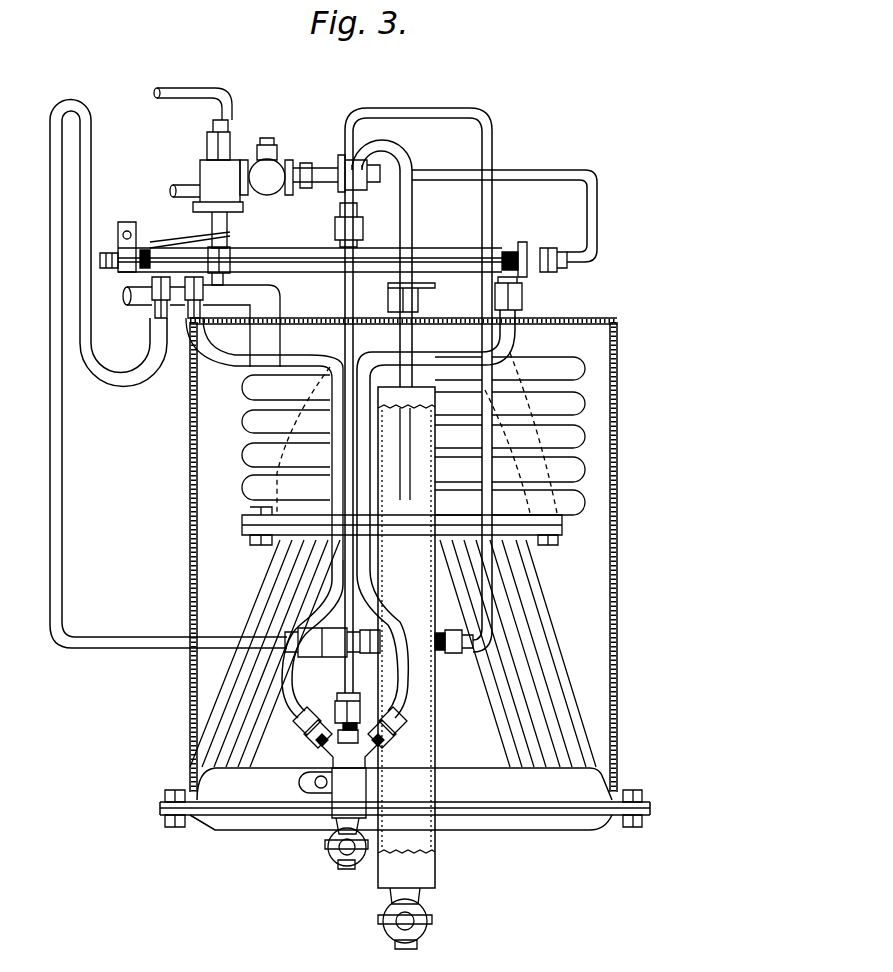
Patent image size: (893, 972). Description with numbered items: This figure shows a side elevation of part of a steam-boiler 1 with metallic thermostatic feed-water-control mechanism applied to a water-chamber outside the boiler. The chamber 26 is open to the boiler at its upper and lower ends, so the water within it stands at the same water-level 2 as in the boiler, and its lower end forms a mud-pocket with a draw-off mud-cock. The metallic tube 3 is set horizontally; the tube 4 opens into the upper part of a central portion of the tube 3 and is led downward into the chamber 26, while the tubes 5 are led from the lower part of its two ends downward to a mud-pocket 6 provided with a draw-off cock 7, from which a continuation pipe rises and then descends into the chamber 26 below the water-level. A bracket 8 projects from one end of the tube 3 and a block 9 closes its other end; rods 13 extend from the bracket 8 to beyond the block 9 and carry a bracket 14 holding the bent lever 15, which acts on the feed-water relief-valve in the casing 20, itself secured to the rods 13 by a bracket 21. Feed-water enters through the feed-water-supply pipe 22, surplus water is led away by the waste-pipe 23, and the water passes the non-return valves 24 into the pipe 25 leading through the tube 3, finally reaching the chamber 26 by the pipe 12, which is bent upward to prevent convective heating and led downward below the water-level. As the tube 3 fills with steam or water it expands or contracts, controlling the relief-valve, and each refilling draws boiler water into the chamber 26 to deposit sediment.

The steam-boiler 1 is at (517, 428).
The water-level 2 is at (425, 500).
The metallic tube 3 is at (448, 252).
The pipe 4 is at (410, 153).
The pipe 5 is at (437, 108).
The mud-pocket 6 is at (343, 790).
The cock 7 is at (337, 865).
The bracket 8 is at (520, 242).
The block 9 is at (157, 268).
The pipe 12 is at (97, 150).
The rods 13 is at (278, 256).
The bracket 14 is at (118, 250).
The bent lever 15 is at (170, 233).
The casing 20 is at (228, 172).
The bracket 21 is at (200, 192).
The feed-water-supply pipe 22 is at (217, 110).
The waste-pipe 23 is at (185, 187).
The non-return valves 24 is at (270, 172).
The pipe 25 is at (385, 165).
The chamber 26 is at (197, 487).